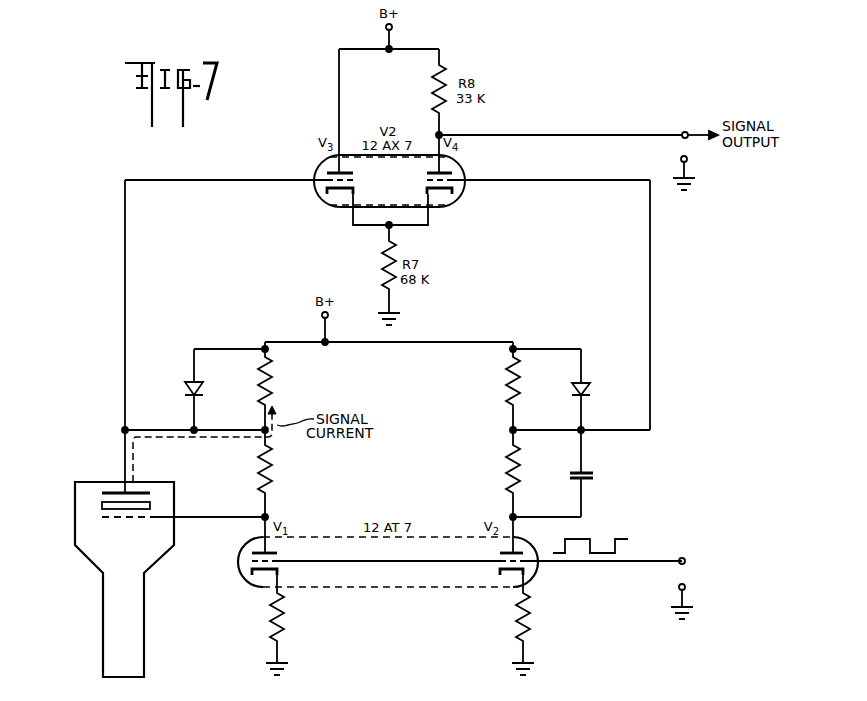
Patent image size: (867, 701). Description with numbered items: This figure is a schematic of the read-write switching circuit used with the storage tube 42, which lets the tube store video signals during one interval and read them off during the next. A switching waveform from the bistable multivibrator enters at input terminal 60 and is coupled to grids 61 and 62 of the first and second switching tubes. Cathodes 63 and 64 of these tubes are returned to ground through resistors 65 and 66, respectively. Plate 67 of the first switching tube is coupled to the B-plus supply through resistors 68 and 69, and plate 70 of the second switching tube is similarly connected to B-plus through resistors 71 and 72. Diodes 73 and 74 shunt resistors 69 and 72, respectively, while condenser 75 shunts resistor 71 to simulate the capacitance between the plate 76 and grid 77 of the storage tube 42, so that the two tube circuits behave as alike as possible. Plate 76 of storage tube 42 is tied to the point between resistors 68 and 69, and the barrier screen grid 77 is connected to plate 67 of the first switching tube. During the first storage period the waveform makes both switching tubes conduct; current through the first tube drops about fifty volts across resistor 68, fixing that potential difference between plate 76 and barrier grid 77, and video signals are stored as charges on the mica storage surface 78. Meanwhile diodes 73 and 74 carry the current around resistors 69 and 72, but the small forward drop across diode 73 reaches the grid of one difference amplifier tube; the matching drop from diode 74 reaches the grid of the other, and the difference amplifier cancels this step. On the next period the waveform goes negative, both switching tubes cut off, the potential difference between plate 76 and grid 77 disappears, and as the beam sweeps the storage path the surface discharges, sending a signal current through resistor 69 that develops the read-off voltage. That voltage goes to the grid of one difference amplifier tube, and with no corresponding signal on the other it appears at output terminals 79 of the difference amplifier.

The storage tube 42 is at (103, 624).
The input terminal 60 is at (683, 555).
The grid 61 is at (240, 561).
The grid 62 is at (527, 565).
The cathode 63 is at (248, 585).
The cathode 64 is at (510, 583).
The resistor 65 is at (283, 613).
The resistor 66 is at (518, 622).
The plate 67 is at (256, 551).
The resistor 68 is at (260, 467).
The resistor 69 is at (263, 382).
The plate 70 is at (516, 551).
The resistor 71 is at (517, 478).
The resistor 72 is at (517, 392).
The diode 73 is at (185, 392).
The diode 74 is at (595, 392).
The condenser 75 is at (585, 472).
The plate 76 is at (112, 491).
The barrier screen grid 77 is at (119, 522).
The mica storage surface 78 is at (102, 508).
The output terminals 79 is at (694, 148).